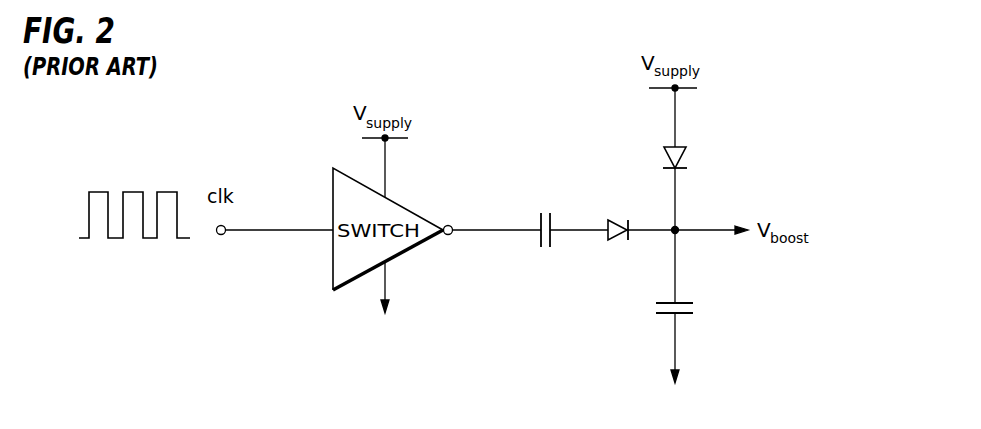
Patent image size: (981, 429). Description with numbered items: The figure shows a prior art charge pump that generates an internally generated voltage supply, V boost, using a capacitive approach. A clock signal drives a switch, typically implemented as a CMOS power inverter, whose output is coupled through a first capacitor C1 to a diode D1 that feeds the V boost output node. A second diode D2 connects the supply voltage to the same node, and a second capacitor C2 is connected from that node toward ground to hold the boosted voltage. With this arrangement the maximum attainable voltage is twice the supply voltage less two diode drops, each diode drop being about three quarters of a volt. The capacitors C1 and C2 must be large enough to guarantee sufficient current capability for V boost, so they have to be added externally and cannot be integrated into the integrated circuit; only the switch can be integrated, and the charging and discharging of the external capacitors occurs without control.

The coupling capacitor C1 is at (542, 243).
The diode D1 is at (618, 247).
The diode D2 is at (693, 158).
The storage capacitor C2 is at (691, 310).